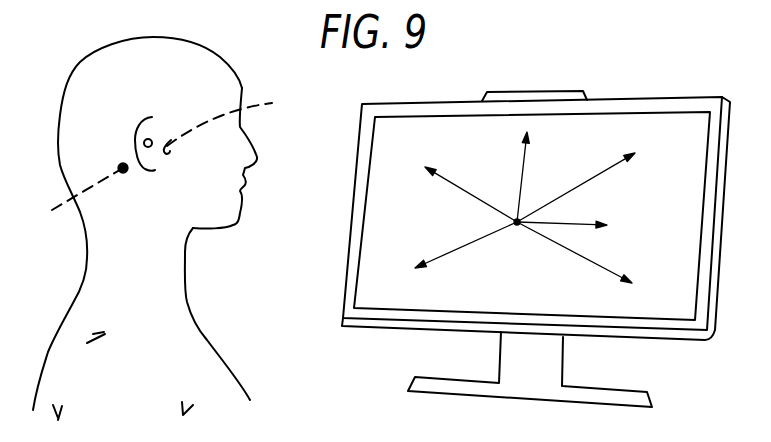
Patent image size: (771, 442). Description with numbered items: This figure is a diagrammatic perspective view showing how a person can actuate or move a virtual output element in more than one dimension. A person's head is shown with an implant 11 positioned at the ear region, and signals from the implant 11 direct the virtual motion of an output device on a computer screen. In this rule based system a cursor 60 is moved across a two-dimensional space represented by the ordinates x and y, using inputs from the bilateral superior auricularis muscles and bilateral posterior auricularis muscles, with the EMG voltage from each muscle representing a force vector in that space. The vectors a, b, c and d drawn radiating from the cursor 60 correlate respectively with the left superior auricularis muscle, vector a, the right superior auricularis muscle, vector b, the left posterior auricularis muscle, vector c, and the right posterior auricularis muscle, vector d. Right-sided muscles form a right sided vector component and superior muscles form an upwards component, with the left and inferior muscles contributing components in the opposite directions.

The implant 11 is at (162, 159).
The cursor 60 is at (514, 249).
The vector a is at (471, 184).
The vector b is at (576, 180).
The vector c is at (466, 253).
The vector d is at (574, 262).
The ordinate x is at (562, 234).
The ordinate y is at (514, 177).